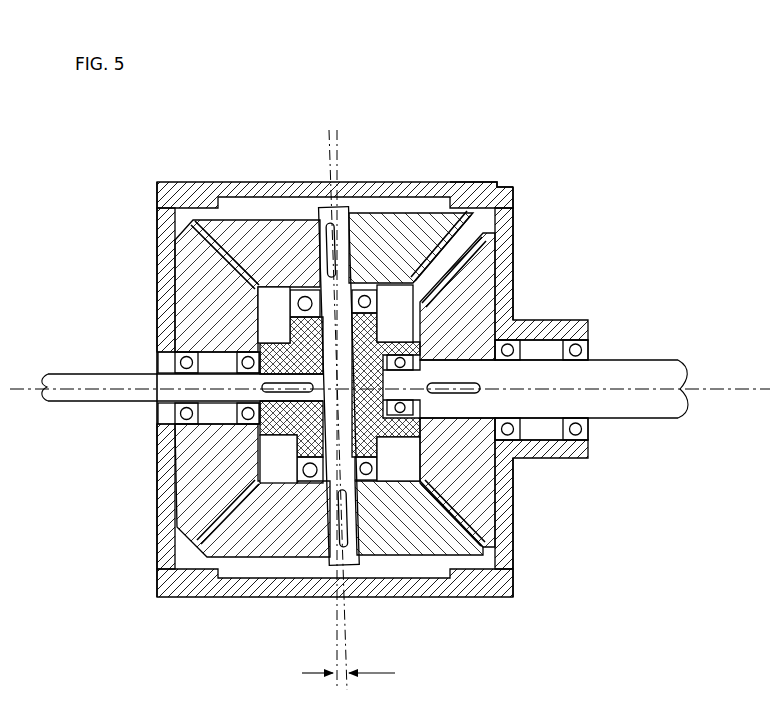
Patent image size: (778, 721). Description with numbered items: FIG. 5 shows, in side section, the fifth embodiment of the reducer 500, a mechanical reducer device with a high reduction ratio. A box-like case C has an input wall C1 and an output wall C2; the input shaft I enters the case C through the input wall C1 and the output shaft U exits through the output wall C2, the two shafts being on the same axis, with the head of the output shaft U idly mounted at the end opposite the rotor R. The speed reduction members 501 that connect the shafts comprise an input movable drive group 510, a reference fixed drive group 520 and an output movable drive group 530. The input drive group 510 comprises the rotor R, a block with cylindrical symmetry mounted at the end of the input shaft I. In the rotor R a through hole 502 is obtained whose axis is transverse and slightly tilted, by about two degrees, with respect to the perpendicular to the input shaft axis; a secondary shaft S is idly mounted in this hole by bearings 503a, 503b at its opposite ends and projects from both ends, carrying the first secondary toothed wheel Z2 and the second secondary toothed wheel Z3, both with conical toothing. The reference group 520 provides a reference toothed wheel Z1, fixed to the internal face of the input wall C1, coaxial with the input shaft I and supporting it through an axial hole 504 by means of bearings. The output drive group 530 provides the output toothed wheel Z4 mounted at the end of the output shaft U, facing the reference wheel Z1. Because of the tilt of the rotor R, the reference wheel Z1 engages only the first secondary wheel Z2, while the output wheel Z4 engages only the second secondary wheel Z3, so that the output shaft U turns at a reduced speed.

The reducer 500 is at (337, 84).
The speed reduction members 501 is at (190, 552).
The through hole 502 is at (352, 512).
The bearing 503a is at (372, 500).
The bearing 503b is at (351, 205).
The axial hole 504 is at (174, 352).
The input movable drive group 510 is at (270, 461).
The reference fixed drive group 520 is at (174, 292).
The output movable drive group 530 is at (468, 300).
The reference toothed wheel Z1 is at (205, 290).
The first secondary toothed wheel Z2 is at (402, 240).
The second secondary toothed wheel Z3 is at (478, 550).
The output toothed wheel Z4 is at (458, 462).
The secondary shaft S is at (332, 222).
The input shaft I is at (120, 393).
The output shaft U is at (624, 380).
The rotor R is at (258, 427).
The box-like case C is at (506, 208).
The input wall C1 is at (166, 182).
The output wall C2 is at (488, 182).